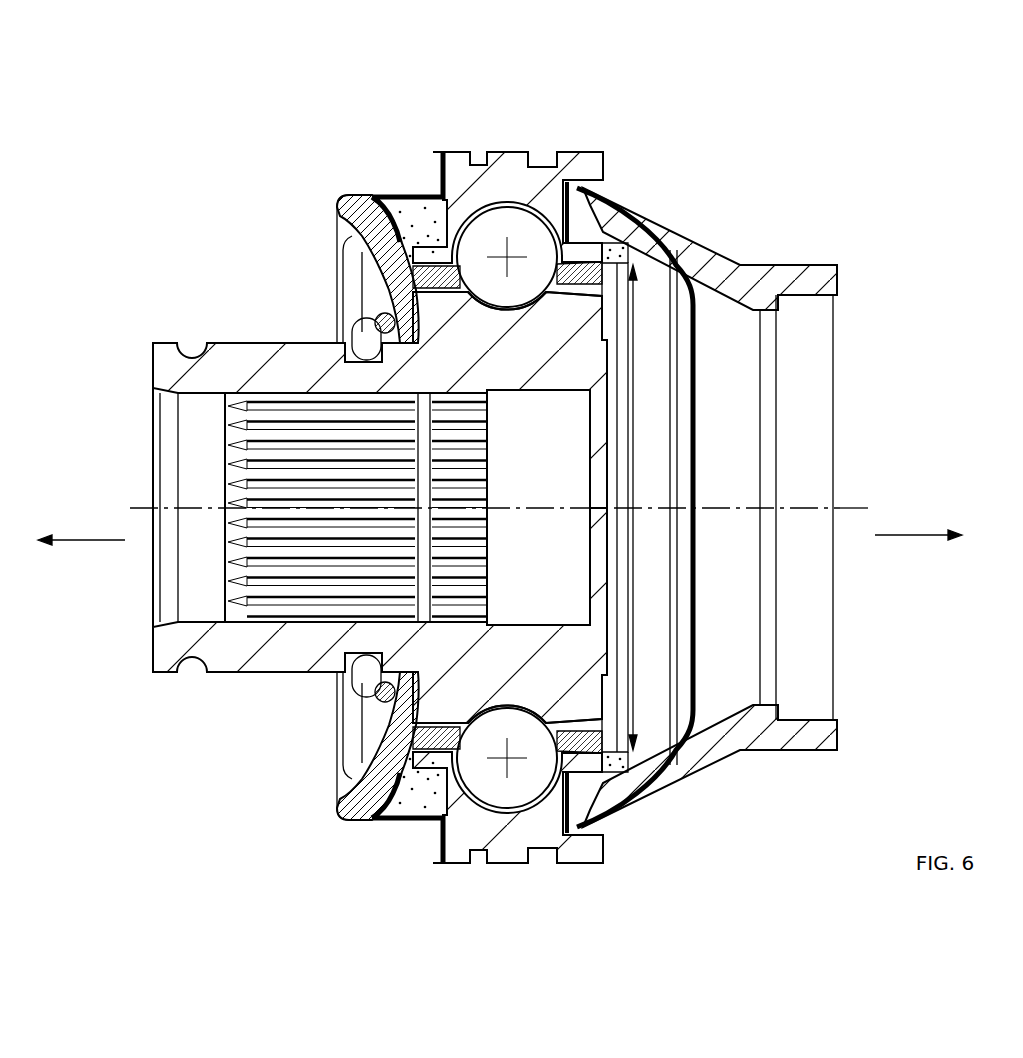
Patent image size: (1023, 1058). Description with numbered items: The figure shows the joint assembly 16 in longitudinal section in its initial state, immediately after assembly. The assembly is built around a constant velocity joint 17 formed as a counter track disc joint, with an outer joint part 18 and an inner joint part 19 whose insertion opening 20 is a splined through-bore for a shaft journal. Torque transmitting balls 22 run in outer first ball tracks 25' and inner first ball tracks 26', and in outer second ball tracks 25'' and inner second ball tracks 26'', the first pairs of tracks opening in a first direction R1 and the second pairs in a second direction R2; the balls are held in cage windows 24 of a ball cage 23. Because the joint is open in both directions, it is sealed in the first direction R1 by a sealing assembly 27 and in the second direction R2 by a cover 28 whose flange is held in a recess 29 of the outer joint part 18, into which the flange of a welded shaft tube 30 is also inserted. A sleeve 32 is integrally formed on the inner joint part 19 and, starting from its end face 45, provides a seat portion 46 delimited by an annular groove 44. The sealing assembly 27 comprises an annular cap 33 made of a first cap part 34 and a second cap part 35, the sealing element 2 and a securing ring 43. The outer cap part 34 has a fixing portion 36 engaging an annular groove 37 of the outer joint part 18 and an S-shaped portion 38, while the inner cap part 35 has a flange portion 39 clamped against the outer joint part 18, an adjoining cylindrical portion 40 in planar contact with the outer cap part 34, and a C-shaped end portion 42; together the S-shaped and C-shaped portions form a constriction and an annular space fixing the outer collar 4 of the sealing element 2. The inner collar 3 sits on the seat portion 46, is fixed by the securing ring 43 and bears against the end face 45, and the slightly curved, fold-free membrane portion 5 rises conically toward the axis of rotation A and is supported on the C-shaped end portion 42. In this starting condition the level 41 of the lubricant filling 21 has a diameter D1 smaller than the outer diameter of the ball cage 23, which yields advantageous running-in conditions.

The sealing element 2 is at (380, 293).
The inner collar 3 is at (348, 688).
The outer collar 4 is at (345, 826).
The membrane portion 5 is at (347, 742).
The joint assembly 16 is at (218, 176).
The constant velocity joint 17 is at (532, 150).
The outer joint part 18 is at (580, 178).
The inner joint part 19 is at (593, 363).
The insertion opening 20 is at (534, 471).
The lubricant filling 21 is at (612, 770).
The torque transmitting balls 22 is at (600, 220).
The ball cage 23 is at (640, 240).
The cage windows 24 is at (545, 790).
The outer first ball tracks 25' is at (442, 177).
The outer second ball tracks 25'' is at (509, 827).
The inner first ball tracks 26' is at (507, 342).
The inner second ball tracks 26'' is at (507, 664).
The sealing assembly 27 is at (332, 178).
The cover 28 is at (699, 466).
The recess 29 is at (582, 205).
The shaft tube 30 is at (793, 752).
The sleeve 32 is at (232, 655).
The annular cap 33 is at (374, 188).
The first cap part 34 is at (335, 215).
The second cap part 35 is at (410, 820).
The fixing portion 36 is at (490, 858).
The annular groove 37 is at (546, 162).
The S-shaped portion 38 is at (336, 802).
The flange portion 39 is at (446, 832).
The lip wall 40 is at (388, 832).
The filling level 41 is at (640, 762).
The C-shaped end portion 42 is at (368, 812).
The securing ring 43 is at (348, 718).
The annular groove 44 is at (330, 341).
The end face 45 is at (455, 675).
The seat portion 46 is at (445, 330).
The axis of rotation A is at (846, 505).
The diameter D1 is at (644, 507).
The first direction R1 is at (81, 524).
The second direction R2 is at (918, 518).